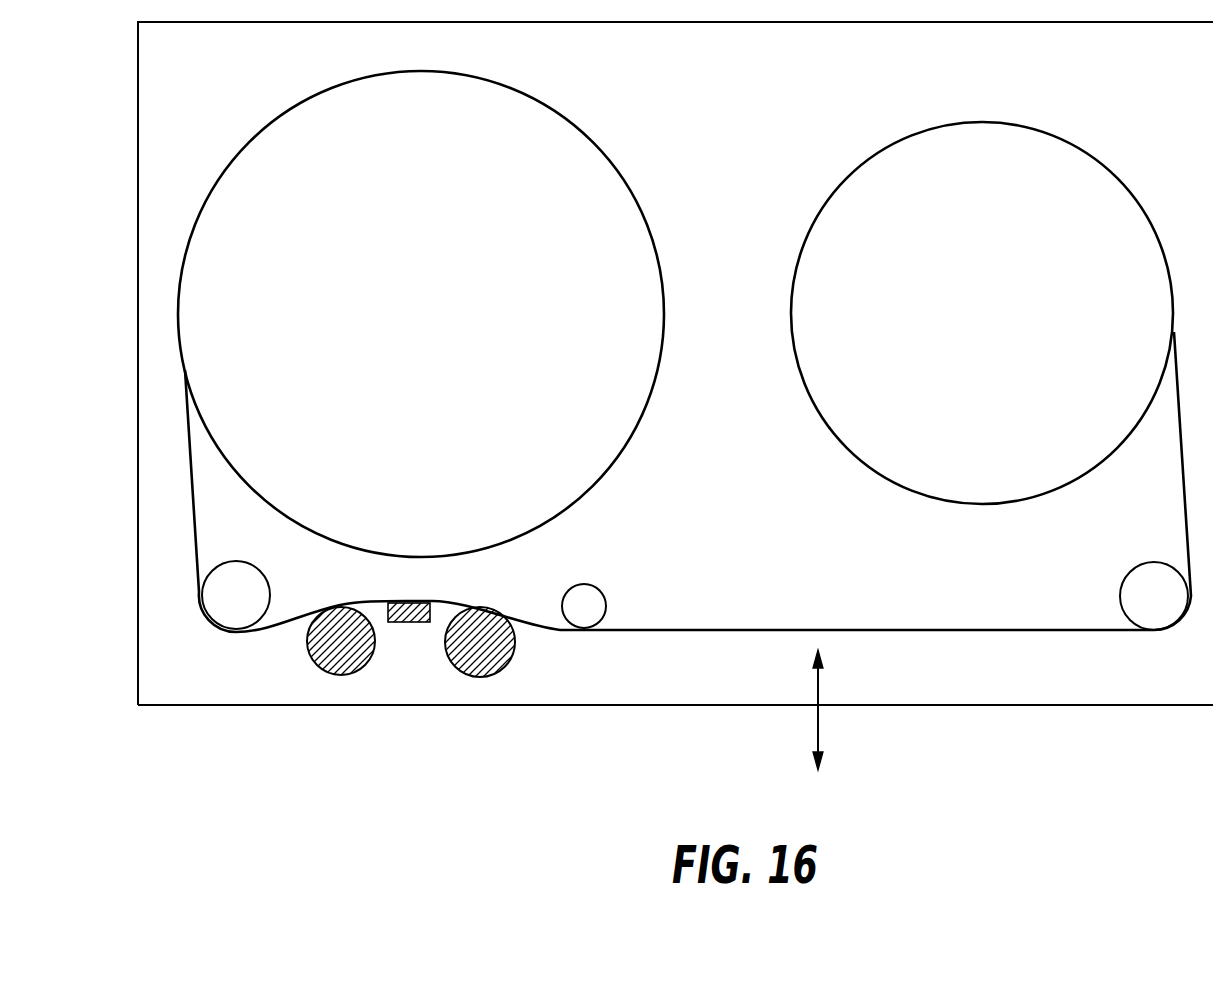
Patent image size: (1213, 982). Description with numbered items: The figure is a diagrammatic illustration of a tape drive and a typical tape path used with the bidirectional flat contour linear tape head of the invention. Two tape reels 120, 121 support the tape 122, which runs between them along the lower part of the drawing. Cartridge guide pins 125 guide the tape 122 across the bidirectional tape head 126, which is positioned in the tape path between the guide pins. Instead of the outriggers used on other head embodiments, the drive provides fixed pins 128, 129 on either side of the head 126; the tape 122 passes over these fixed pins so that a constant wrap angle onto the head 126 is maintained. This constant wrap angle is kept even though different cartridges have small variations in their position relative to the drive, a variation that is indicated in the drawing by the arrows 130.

The tape reel 120 is at (608, 150).
The tape reel 121 is at (1067, 141).
The tape 122 is at (718, 628).
The cartridge guide pins 125 is at (270, 592).
The bidirectional tape head 126 is at (413, 624).
The fixed pin 128 is at (307, 657).
The fixed pin 129 is at (515, 652).
The arrows 130 is at (820, 724).